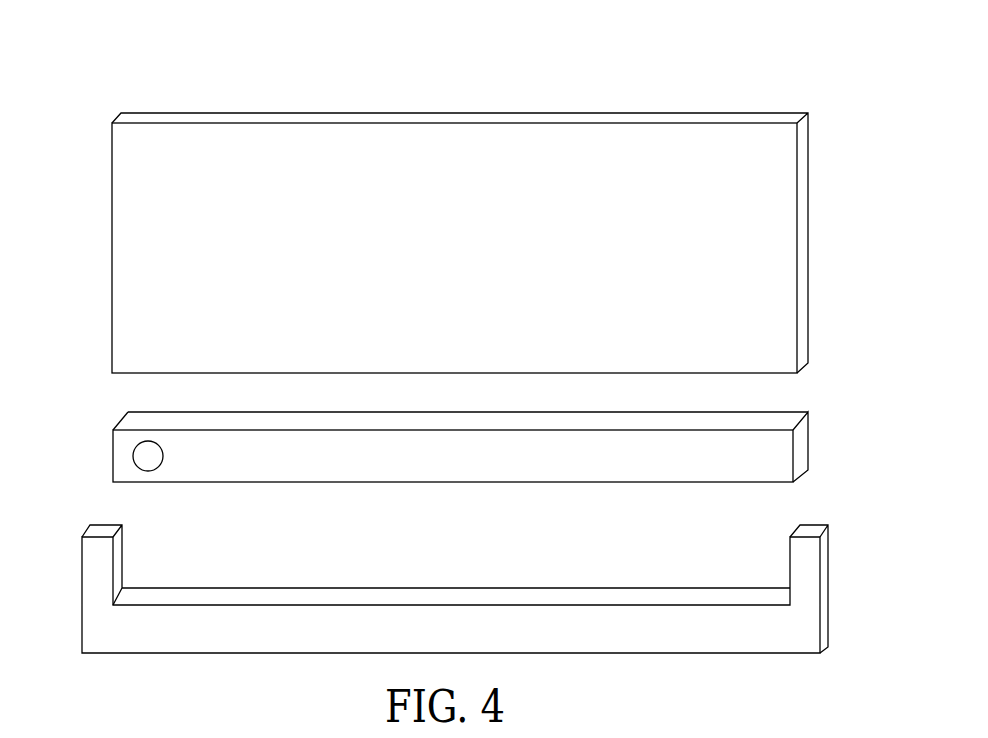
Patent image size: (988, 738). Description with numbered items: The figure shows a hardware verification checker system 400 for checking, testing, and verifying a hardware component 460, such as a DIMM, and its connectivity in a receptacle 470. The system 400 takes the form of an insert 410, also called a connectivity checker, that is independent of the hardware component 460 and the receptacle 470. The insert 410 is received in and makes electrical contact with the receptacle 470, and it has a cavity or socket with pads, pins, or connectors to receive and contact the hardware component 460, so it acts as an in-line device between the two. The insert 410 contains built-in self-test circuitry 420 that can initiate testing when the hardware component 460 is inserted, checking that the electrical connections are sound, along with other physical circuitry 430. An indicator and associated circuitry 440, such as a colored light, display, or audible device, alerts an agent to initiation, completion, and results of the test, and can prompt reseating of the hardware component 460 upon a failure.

The system 400 is at (97, 89).
The insert 410 is at (783, 469).
The test circuitry 420 is at (130, 423).
The other physical circuitry 430 is at (796, 417).
The indicator 440 is at (134, 461).
The hardware component 460 is at (746, 233).
The receptacle 470 is at (700, 640).